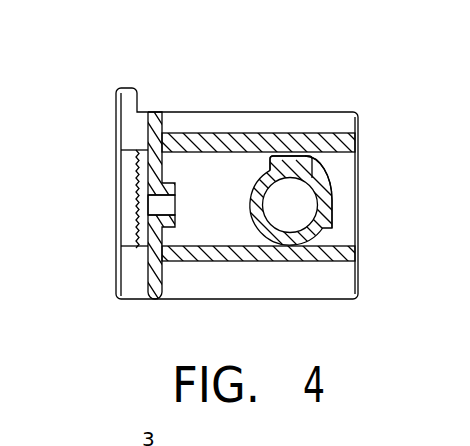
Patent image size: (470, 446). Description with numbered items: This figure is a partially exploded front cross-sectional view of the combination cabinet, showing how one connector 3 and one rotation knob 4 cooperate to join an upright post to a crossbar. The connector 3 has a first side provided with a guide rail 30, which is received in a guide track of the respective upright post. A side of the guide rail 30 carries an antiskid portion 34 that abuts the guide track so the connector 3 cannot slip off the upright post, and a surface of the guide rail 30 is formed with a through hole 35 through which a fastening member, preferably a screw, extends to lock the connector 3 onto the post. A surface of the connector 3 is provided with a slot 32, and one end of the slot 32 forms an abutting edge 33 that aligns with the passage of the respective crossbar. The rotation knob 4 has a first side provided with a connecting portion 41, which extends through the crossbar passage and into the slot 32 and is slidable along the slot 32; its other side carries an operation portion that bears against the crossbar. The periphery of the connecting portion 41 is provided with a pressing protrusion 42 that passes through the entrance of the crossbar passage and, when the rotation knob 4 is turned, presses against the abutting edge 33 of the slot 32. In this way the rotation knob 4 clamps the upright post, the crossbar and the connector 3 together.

The connector 3 is at (198, 122).
The guide rail 30 is at (130, 168).
The slot 32 is at (197, 162).
The abutting edge 33 is at (341, 178).
The antiskid portion 34 is at (140, 200).
The through hole 35 is at (163, 205).
The rotation knob 4 is at (293, 205).
The connecting portion 41 is at (300, 244).
The pressing protrusion 42 is at (302, 148).